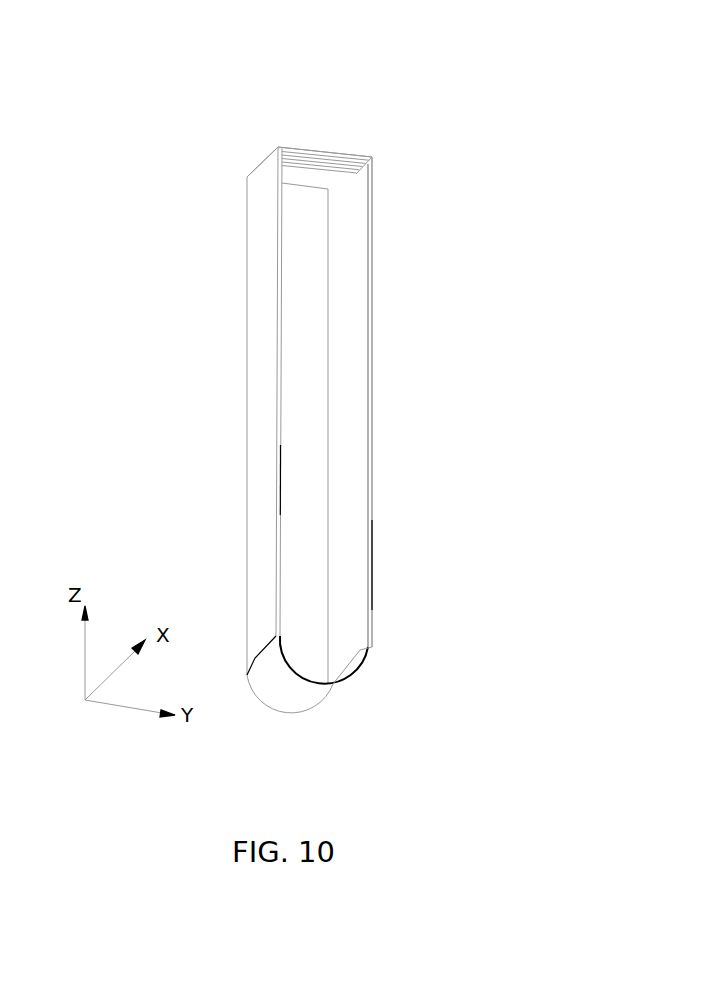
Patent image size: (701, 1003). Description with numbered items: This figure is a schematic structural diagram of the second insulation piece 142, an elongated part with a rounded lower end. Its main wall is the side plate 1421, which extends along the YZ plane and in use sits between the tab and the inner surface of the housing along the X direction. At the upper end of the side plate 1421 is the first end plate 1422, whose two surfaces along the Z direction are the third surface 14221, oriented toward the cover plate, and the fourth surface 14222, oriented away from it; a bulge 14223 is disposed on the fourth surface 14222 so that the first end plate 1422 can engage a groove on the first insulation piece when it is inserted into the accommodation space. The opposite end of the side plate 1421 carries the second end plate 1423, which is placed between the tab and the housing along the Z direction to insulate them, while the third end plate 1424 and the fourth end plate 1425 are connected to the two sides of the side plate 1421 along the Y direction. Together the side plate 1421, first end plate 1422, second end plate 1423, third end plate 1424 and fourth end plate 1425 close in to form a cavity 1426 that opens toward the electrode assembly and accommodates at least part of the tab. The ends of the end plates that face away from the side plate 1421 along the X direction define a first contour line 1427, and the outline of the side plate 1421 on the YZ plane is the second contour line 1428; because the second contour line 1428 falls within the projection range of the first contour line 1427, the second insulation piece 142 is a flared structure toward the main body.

The second insulation piece 142 is at (356, 32).
The side plate 1421 is at (303, 342).
The first end plate 1422 is at (298, 173).
The third surface 14221 is at (259, 143).
The fourth surface 14222 is at (333, 194).
The bulge 14223 is at (347, 177).
The second end plate 1423 is at (300, 697).
The third end plate 1424 is at (265, 497).
The fourth end plate 1425 is at (350, 503).
The cavity 1426 is at (335, 362).
The first contour line 1427 is at (387, 559).
The second contour line 1428 is at (236, 404).